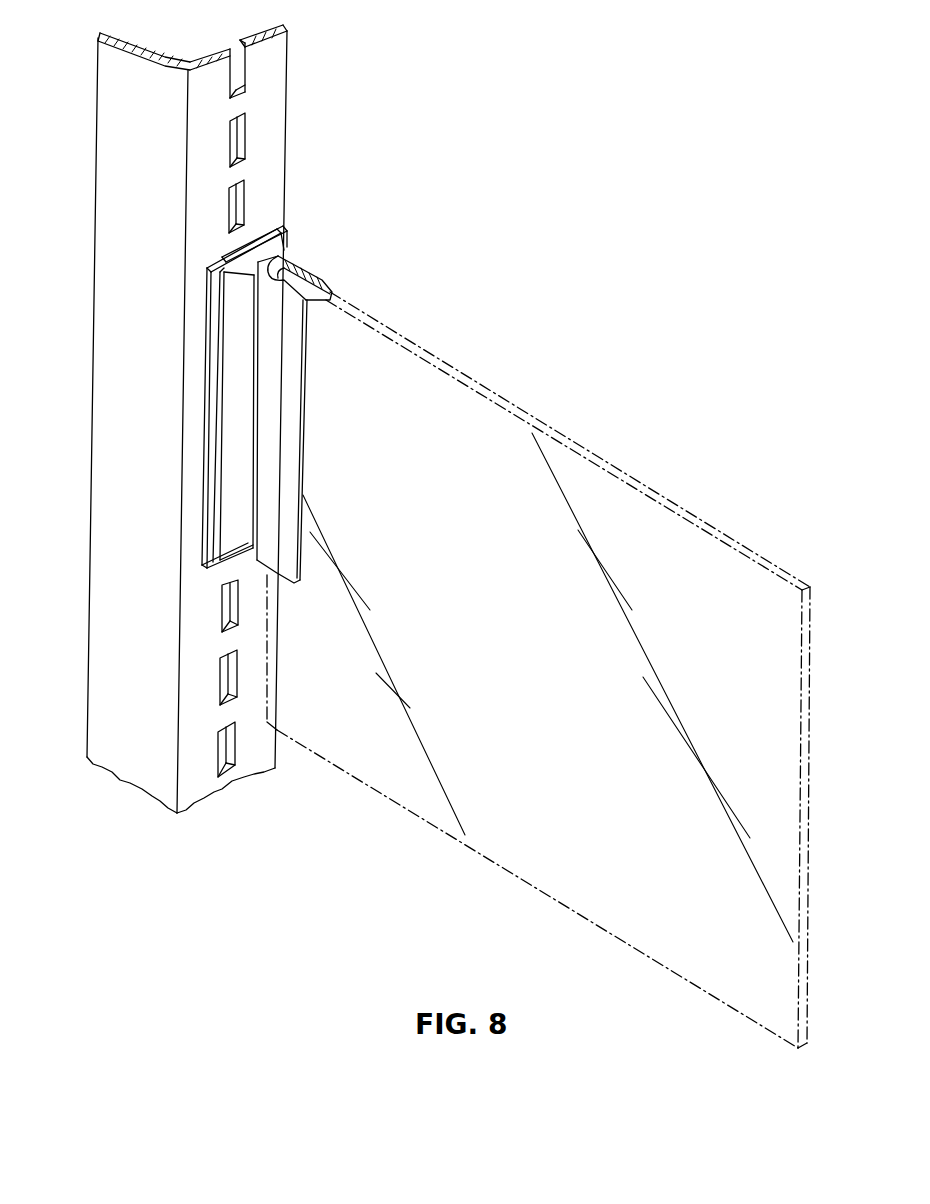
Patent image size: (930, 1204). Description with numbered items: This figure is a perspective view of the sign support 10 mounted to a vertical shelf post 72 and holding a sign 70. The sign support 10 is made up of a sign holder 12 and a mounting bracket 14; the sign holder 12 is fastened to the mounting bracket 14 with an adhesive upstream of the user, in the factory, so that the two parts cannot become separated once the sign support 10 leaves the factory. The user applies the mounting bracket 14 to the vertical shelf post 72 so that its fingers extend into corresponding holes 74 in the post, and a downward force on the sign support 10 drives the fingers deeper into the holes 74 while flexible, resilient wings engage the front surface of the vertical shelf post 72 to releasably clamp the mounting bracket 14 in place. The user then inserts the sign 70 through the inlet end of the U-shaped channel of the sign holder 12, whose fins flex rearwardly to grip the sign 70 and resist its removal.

The sign support 10 is at (318, 248).
The sign holder 12 is at (280, 420).
The mounting bracket 14 is at (245, 237).
The sign 70 is at (632, 507).
The vertical shelf post 72 is at (262, 55).
The holes 74 is at (242, 130).